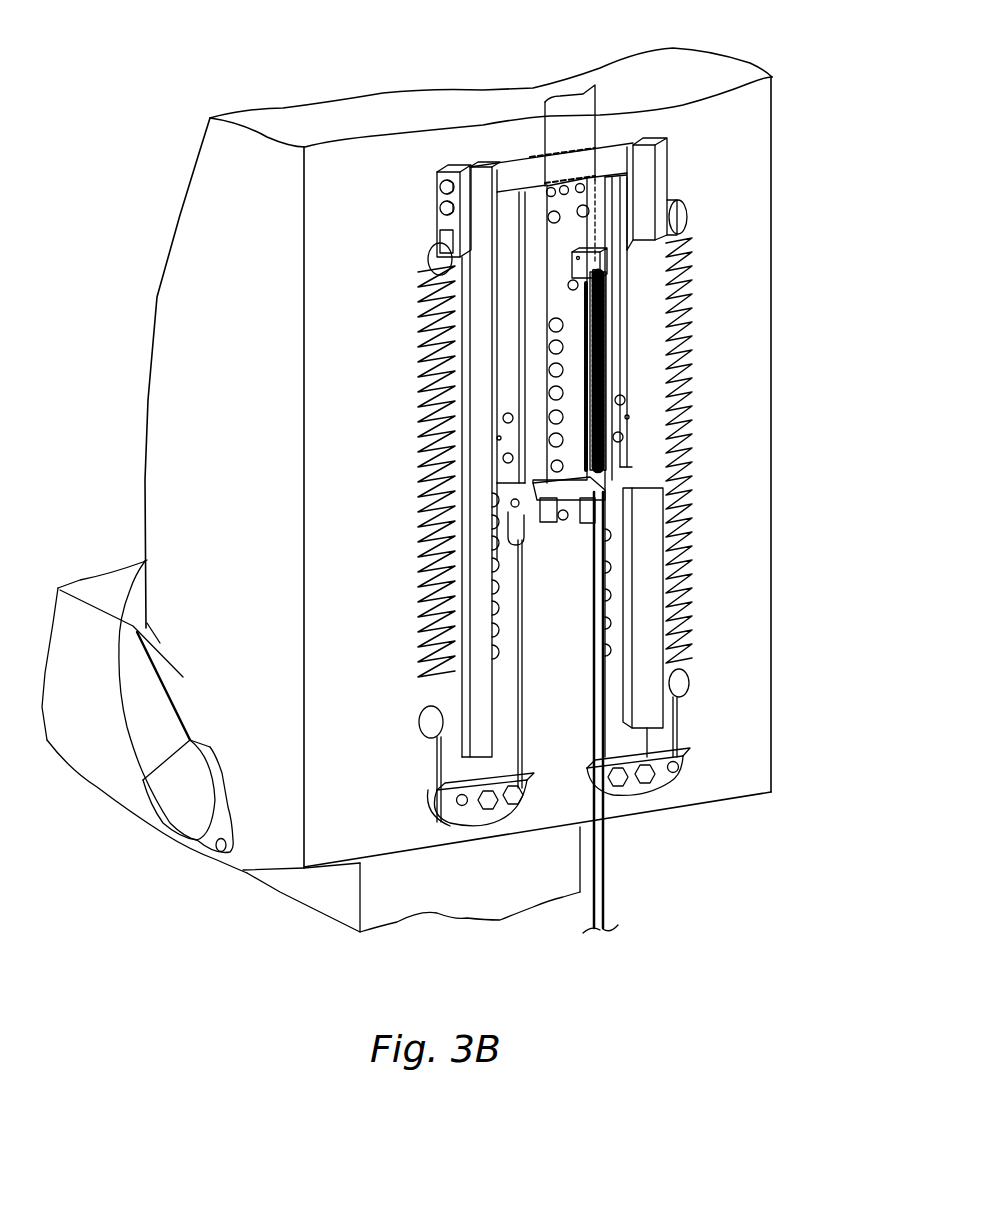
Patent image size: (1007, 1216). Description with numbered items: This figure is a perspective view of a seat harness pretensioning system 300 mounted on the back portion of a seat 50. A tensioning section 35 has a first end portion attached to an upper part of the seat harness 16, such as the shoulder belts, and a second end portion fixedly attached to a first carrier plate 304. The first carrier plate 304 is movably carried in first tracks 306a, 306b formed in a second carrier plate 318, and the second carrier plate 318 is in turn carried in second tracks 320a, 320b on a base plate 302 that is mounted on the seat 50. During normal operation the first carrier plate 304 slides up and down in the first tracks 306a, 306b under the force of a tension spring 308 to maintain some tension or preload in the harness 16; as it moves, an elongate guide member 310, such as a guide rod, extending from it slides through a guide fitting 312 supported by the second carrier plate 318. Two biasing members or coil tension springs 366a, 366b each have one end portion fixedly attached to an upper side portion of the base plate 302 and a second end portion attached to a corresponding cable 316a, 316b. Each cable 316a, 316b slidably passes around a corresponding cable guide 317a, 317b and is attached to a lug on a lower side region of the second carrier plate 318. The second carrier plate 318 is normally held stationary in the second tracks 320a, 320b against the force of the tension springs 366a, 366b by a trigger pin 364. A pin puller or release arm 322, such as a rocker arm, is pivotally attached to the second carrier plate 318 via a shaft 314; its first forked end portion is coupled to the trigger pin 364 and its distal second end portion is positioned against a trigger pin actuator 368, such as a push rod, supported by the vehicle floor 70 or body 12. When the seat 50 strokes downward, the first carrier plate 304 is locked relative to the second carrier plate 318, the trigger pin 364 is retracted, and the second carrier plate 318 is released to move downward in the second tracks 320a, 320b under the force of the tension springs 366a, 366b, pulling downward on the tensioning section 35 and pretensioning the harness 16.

The seat harness 16 is at (137, 597).
The tensioning section 35 is at (583, 112).
The seat 50 is at (748, 114).
The seat harness pretensioning system 300 is at (584, 486).
The base plate 302 is at (558, 790).
The first carrier plate 304 is at (615, 257).
The first track 306a is at (445, 222).
The first track 306b is at (597, 207).
The tension spring 308 is at (607, 280).
The elongate guide member 310 is at (607, 347).
The guide fitting 312 is at (600, 535).
The shaft 314 is at (557, 520).
The cable 316a is at (518, 710).
The cable 316b is at (587, 700).
The cable guide 317a is at (460, 812).
The cable guide 317b is at (657, 787).
The second carrier plate 318 is at (610, 363).
The second track 320a is at (440, 690).
The second track 320b is at (620, 625).
The release arm 322 is at (607, 497).
The trigger pin 364 is at (573, 523).
The tension spring 366a is at (420, 500).
The tension spring 366b is at (690, 420).
The trigger pin actuator 368 is at (653, 726).
The vehicle floor 70 is at (653, 726).
The vehicle body 12 is at (603, 930).